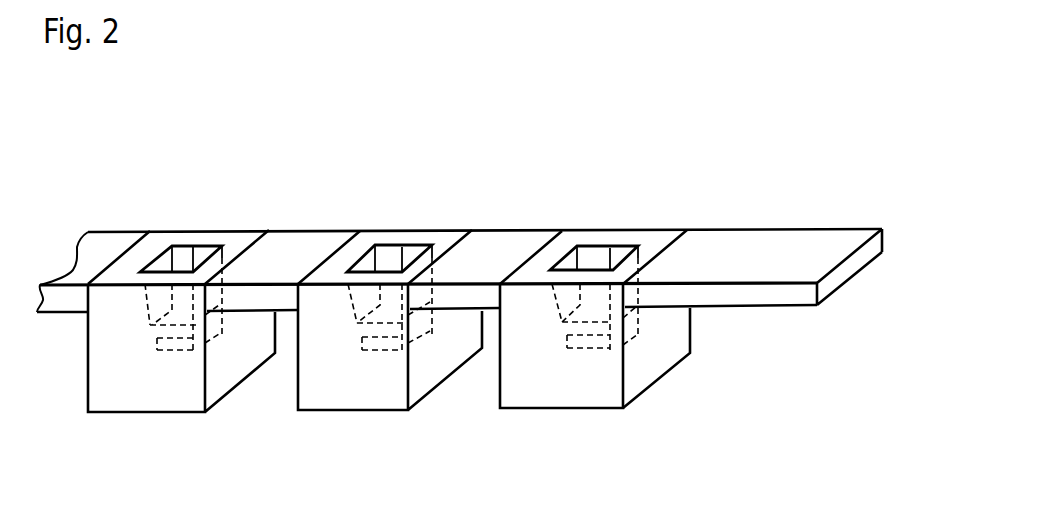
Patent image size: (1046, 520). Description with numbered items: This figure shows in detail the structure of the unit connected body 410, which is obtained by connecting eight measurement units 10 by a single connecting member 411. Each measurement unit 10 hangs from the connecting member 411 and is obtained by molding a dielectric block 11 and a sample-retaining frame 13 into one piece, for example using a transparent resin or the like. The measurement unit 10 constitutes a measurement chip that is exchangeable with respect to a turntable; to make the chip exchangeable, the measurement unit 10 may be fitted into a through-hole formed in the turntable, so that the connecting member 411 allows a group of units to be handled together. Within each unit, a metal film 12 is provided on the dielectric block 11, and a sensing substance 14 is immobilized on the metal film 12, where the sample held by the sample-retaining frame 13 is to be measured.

The unit connected body 410 is at (513, 120).
The connecting member 411 is at (755, 248).
The measurement unit 10 is at (153, 432).
The dielectric block 11 is at (677, 335).
The metal film 12 is at (603, 355).
The sample-retaining frame 13 is at (655, 240).
The sensing substance 14 is at (610, 328).